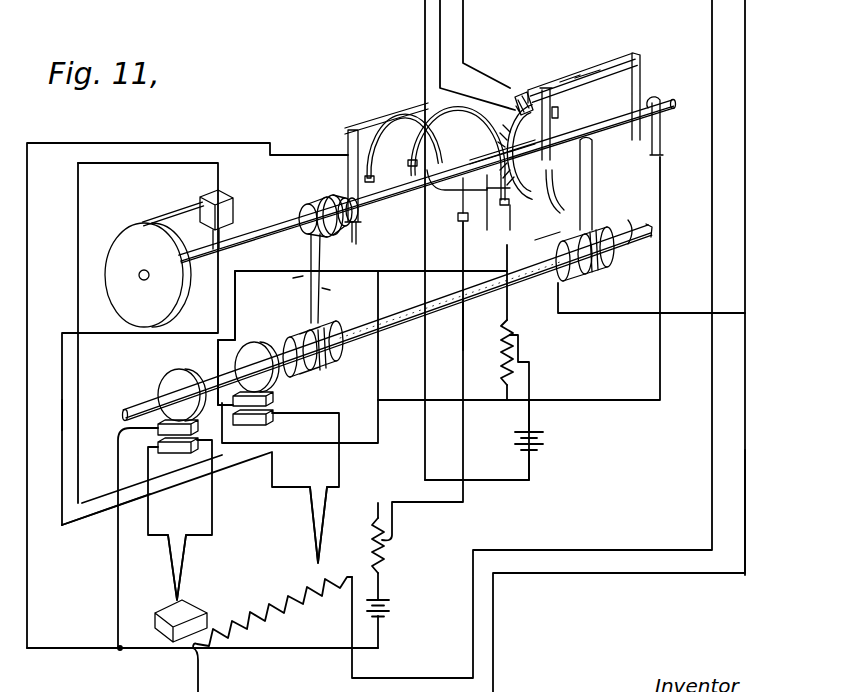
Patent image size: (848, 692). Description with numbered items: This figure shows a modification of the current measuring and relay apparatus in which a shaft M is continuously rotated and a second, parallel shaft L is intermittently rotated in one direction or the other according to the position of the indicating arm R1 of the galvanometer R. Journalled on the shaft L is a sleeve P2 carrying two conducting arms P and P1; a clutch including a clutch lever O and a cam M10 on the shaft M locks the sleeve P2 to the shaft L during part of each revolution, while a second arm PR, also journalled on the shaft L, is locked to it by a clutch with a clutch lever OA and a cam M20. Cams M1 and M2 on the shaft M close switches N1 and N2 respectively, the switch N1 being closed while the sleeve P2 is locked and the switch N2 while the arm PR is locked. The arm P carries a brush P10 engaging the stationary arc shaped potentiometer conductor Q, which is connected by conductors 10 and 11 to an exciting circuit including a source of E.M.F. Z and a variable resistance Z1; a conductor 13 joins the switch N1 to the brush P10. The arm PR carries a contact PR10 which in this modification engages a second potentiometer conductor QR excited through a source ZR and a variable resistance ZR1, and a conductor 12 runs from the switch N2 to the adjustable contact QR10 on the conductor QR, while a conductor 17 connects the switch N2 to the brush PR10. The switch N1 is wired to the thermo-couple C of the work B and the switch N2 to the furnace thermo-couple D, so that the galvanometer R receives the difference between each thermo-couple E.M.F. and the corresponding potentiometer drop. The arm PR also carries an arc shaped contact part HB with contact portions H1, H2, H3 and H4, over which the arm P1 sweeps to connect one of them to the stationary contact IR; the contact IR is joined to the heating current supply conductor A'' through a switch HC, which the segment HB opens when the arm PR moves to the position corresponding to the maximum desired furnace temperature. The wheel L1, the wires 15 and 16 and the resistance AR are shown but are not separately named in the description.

The disk wheel L1 is at (122, 240).
The indicating arm R1 is at (175, 216).
The galvanometer R is at (230, 203).
The shaft L is at (266, 233).
The arm P is at (346, 134).
The brush or contact P10 is at (368, 132).
The potentiometer resistance Q is at (456, 161).
The sleeve P2 is at (416, 205).
The contact portion H2 is at (500, 141).
The contact portion H3 is at (460, 214).
The contact portion H4 is at (515, 201).
The arc shaped contact part HB is at (528, 92).
The contact portion H1 is at (550, 92).
The second potentiometer conductor QR is at (494, 100).
The arm PR is at (641, 82).
The contact PR10 is at (549, 80).
The arm P1 is at (576, 80).
The clutch lever OA is at (598, 163).
The arc shaped contact IR is at (566, 185).
The switch HC is at (583, 202).
The adjustable contact QR10 is at (538, 240).
The clutch lever O is at (324, 257).
The shaft M is at (140, 406).
The cam M1 is at (178, 382).
The cam M2 is at (270, 348).
The cam M10 is at (334, 326).
The cam M20 is at (580, 276).
The switch N1 is at (148, 447).
The switch N2 is at (279, 397).
The conductor 12 is at (237, 313).
The conductor 13 is at (383, 382).
The conductor 11 is at (463, 353).
The wire 15 is at (88, 421).
The wire 16 is at (78, 530).
The conductor 17 is at (600, 401).
The conductor 10 is at (70, 649).
The heating current supply conductor A'' is at (756, 512).
The work B is at (157, 624).
The thermo-couple C is at (182, 601).
The furnace thermo-couple D is at (309, 573).
The resistor AR is at (291, 616).
The variable resistance Z1 is at (387, 574).
The source of E.M.F. Z is at (392, 621).
The variable resistance ZR1 is at (512, 334).
The source of E.M.F. ZR is at (545, 441).